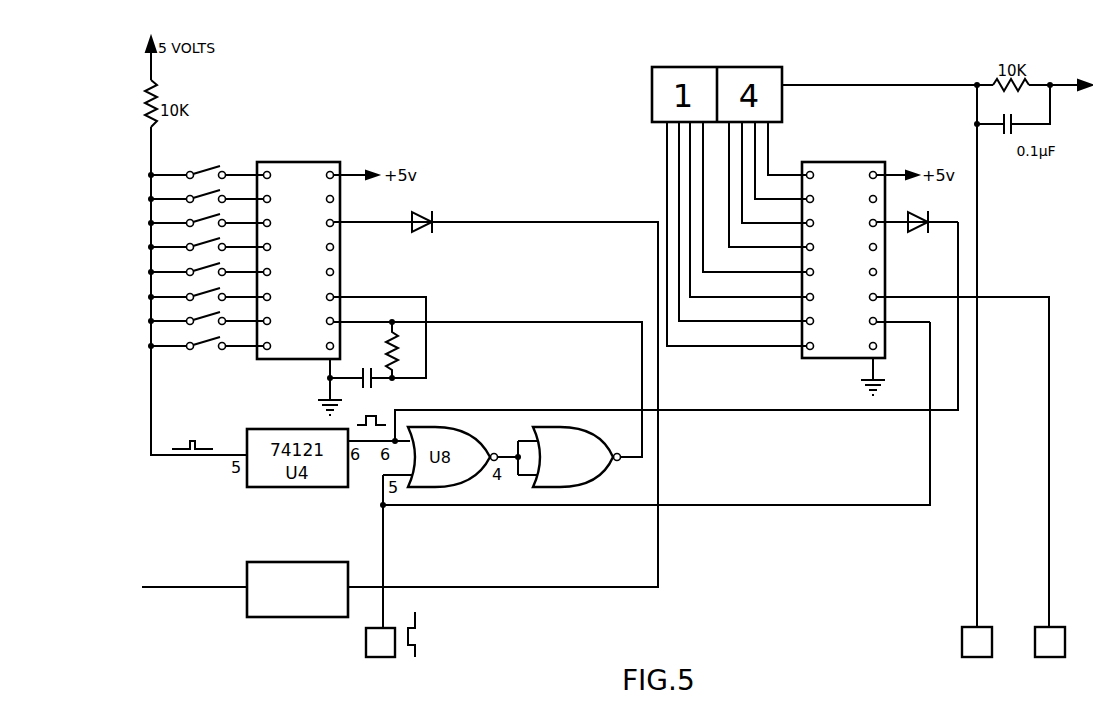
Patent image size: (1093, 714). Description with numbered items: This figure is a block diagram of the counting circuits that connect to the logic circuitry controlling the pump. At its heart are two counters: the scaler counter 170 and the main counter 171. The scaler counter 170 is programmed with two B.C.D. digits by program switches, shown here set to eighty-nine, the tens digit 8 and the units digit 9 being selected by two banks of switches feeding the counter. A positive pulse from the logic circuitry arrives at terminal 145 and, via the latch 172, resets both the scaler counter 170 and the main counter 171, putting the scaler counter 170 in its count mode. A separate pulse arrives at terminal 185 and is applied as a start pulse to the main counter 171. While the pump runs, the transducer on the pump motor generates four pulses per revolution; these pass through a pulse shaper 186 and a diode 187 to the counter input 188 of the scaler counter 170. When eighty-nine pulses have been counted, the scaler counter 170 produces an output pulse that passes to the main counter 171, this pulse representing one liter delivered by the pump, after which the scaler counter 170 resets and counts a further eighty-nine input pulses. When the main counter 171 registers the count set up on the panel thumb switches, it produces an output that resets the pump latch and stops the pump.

The tens digit program switch setting 8 is at (140, 345).
The units digit program switch setting 9 is at (140, 253).
The terminal 145 is at (393, 629).
The scaler counter 170 is at (343, 163).
The main counter 171 is at (802, 360).
The latch 172 is at (510, 489).
The terminal 185 is at (1056, 657).
The pulse shaper 186 is at (344, 568).
The diode 187 is at (432, 216).
The counter input 188 is at (343, 221).